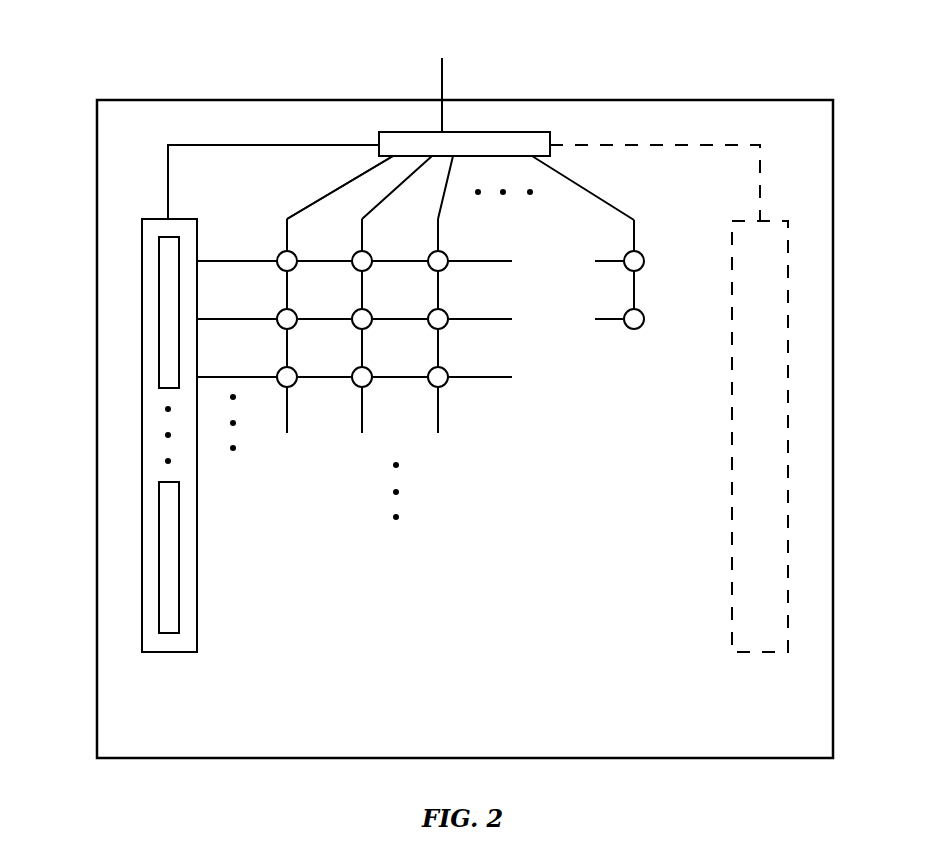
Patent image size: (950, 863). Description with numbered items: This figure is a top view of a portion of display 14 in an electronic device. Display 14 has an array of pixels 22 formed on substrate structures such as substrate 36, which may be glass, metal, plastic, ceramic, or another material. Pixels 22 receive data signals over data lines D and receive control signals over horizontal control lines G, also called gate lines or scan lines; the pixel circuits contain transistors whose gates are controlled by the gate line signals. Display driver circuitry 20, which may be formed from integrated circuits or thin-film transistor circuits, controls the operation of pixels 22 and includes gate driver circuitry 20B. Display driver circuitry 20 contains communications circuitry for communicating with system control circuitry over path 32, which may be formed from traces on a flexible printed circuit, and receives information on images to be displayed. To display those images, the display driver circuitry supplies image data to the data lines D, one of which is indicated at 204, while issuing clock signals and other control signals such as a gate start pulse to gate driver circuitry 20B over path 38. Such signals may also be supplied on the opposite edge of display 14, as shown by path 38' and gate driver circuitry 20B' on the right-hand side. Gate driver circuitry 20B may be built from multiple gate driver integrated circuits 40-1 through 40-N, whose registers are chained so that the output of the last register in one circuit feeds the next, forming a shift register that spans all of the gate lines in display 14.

The display 14 is at (711, 62).
The substrate 36 is at (786, 100).
The display driver circuitry 20 is at (531, 117).
The path 32 is at (442, 78).
The data line path 204 is at (380, 157).
The path 38 is at (273, 182).
The path 38' is at (655, 183).
The gate driver circuitry 20B is at (146, 426).
The gate driver circuitry 20B' is at (777, 411).
The gate driver integrated circuit 40-1 is at (159, 323).
The gate driver integrated circuit 40-N is at (159, 556).
The pixels 22 is at (446, 311).